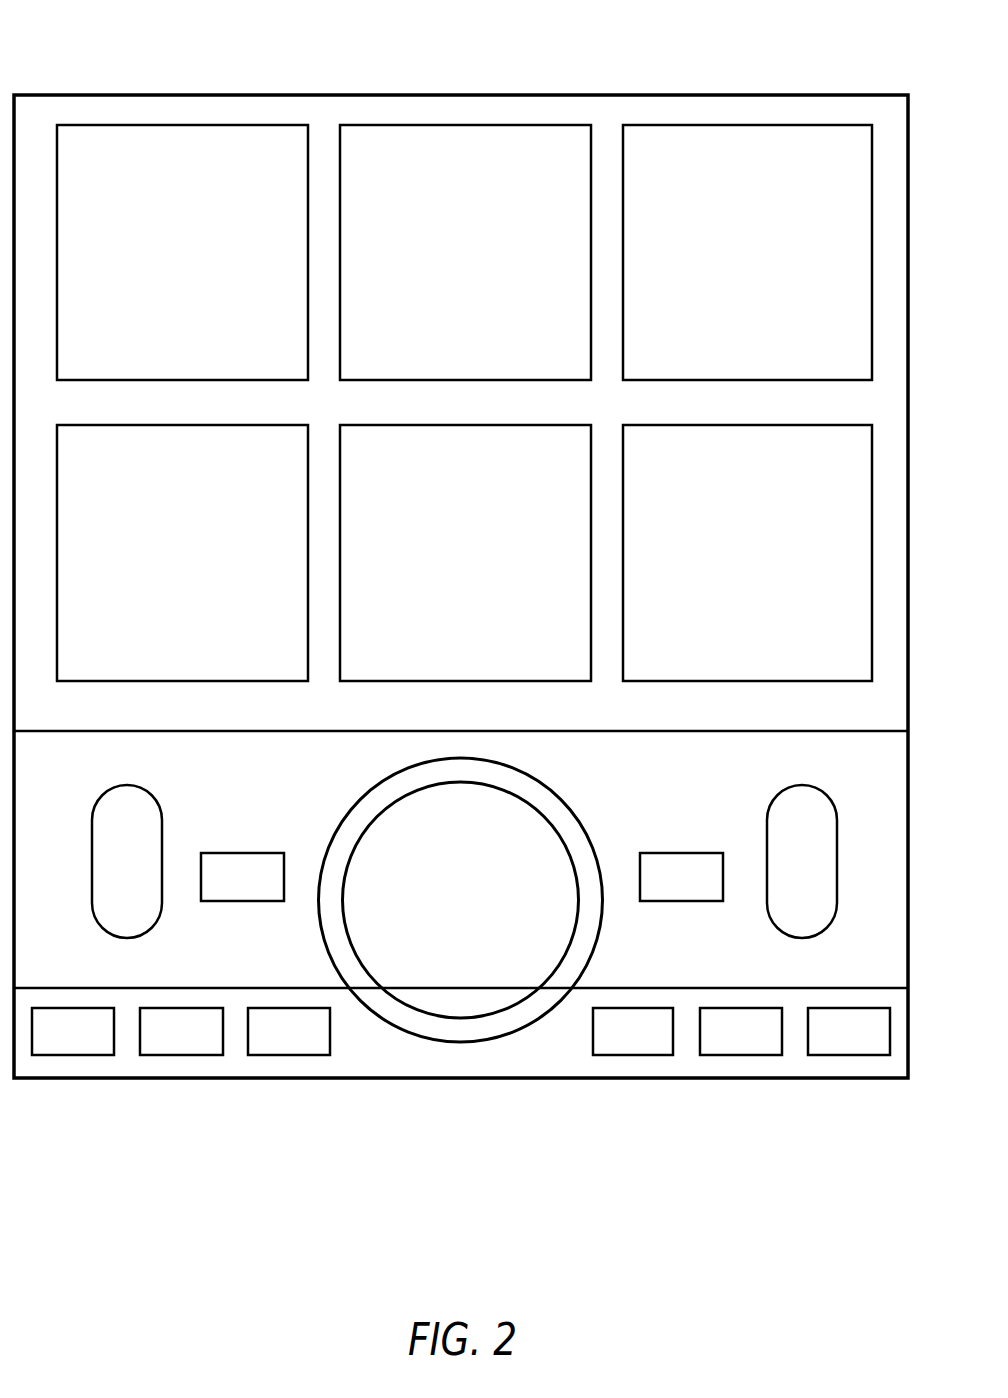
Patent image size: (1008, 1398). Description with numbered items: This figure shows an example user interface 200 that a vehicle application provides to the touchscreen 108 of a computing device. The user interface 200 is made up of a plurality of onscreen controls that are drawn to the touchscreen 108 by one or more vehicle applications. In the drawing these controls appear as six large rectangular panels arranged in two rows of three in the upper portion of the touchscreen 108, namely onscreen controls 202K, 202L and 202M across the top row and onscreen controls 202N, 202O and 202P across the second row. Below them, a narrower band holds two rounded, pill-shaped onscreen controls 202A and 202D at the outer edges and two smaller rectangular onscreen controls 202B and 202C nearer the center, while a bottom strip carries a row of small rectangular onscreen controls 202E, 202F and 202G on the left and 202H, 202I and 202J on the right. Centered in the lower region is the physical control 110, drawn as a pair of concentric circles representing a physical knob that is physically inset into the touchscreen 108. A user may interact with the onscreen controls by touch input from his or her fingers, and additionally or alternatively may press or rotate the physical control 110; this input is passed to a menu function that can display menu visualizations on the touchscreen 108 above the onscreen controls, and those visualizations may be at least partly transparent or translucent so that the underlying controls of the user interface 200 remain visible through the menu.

The user interface 200 is at (176, 44).
The touchscreen 108 is at (826, 95).
The physical control 110 is at (583, 822).
The onscreen control 202A is at (100, 877).
The onscreen control 202B is at (216, 890).
The onscreen control 202C is at (655, 890).
The onscreen control 202D is at (775, 871).
The onscreen control 202E is at (46, 1044).
The onscreen control 202F is at (155, 1044).
The onscreen control 202G is at (261, 1044).
The onscreen control 202H is at (605, 1044).
The onscreen control 202I is at (718, 1044).
The onscreen control 202J is at (823, 1044).
The onscreen control 202K is at (211, 273).
The onscreen control 202L is at (492, 273).
The onscreen control 202M is at (778, 273).
The onscreen control 202N is at (211, 573).
The onscreen control 202O is at (437, 573).
The onscreen control 202P is at (720, 573).